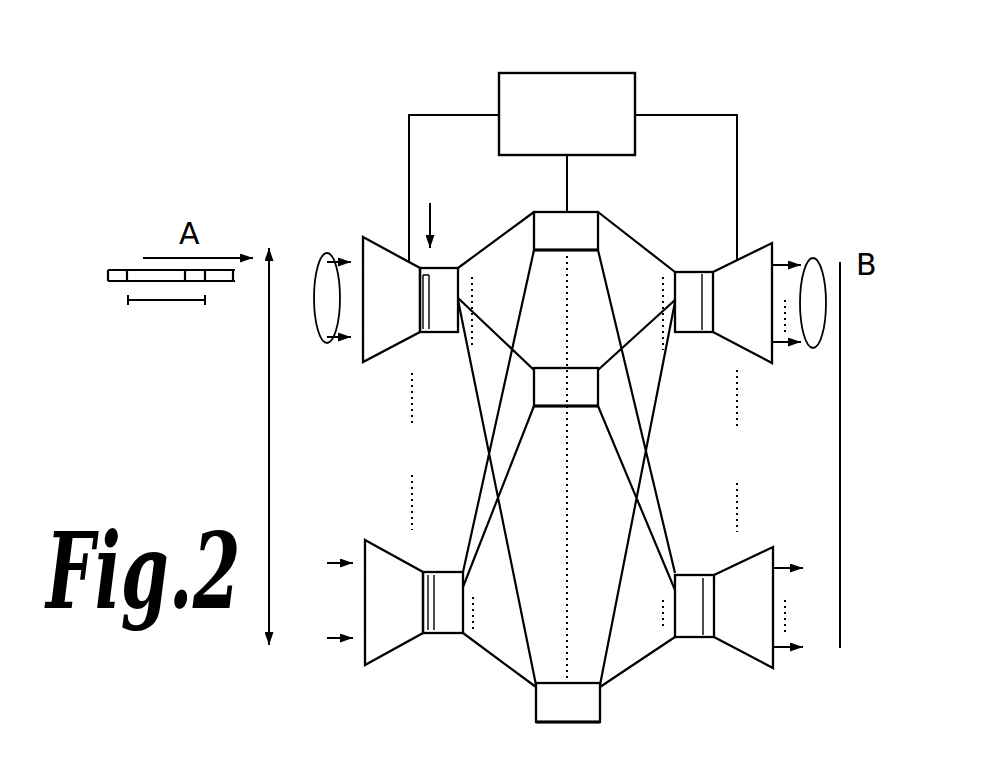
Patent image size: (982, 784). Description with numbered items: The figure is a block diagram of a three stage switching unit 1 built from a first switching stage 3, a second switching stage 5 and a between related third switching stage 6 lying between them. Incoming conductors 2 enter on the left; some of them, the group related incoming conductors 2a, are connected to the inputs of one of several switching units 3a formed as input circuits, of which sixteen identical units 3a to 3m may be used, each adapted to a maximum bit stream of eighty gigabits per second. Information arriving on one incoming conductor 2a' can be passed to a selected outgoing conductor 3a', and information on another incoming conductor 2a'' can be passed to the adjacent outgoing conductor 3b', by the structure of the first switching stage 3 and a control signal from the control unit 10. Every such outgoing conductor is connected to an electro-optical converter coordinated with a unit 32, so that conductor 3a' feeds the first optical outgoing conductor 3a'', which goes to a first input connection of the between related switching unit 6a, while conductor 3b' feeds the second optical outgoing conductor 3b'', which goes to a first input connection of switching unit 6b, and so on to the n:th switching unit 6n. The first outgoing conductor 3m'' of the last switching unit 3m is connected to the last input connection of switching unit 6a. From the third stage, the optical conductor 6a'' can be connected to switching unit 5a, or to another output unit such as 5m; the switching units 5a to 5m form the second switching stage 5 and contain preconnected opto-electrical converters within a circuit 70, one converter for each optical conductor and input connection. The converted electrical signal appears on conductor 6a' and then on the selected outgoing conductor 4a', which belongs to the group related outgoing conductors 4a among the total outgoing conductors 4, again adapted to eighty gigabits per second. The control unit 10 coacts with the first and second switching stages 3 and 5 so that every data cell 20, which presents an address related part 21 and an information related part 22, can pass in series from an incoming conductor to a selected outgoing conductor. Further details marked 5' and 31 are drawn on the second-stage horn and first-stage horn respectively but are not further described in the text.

The switching unit 1 is at (832, 68).
The incoming conductors 2 is at (248, 497).
The first switching stage 3 is at (366, 196).
The switching unit 3a is at (447, 191).
The outgoing conductor 3a' is at (463, 228).
The optical conductor 3a'' is at (535, 202).
The outgoing conductor 3b' is at (397, 302).
The optical conductor 3b'' is at (503, 293).
The switching unit 3m is at (414, 630).
The outgoing conductor 3m'' is at (446, 486).
The incoming conductors 2a is at (333, 328).
The incoming conductor 2a' is at (305, 232).
The incoming conductor 2a'' is at (300, 316).
The outgoing conductors 4 is at (856, 455).
The outgoing conductors 4a is at (802, 333).
The outgoing conductor 4a' is at (833, 230).
The second switching stage 5 is at (737, 268).
The horn flare wall 5' is at (758, 395).
The switching unit 5a is at (735, 352).
The switching unit 5m is at (758, 548).
The third switching stage 6 is at (553, 467).
The between related switching unit 6a is at (594, 205).
The conductor 6a' is at (764, 193).
The optical conductor 6a'' is at (683, 222).
The between related switching unit 6b is at (568, 364).
The between related switching unit 6n is at (557, 683).
The control unit 10 is at (621, 78).
The data cell 20 is at (166, 316).
The address related part 21 is at (200, 283).
The information related part 22 is at (140, 283).
The horn mouth wall 31 is at (380, 343).
The unit 32 is at (436, 334).
The circuit 70 is at (710, 334).